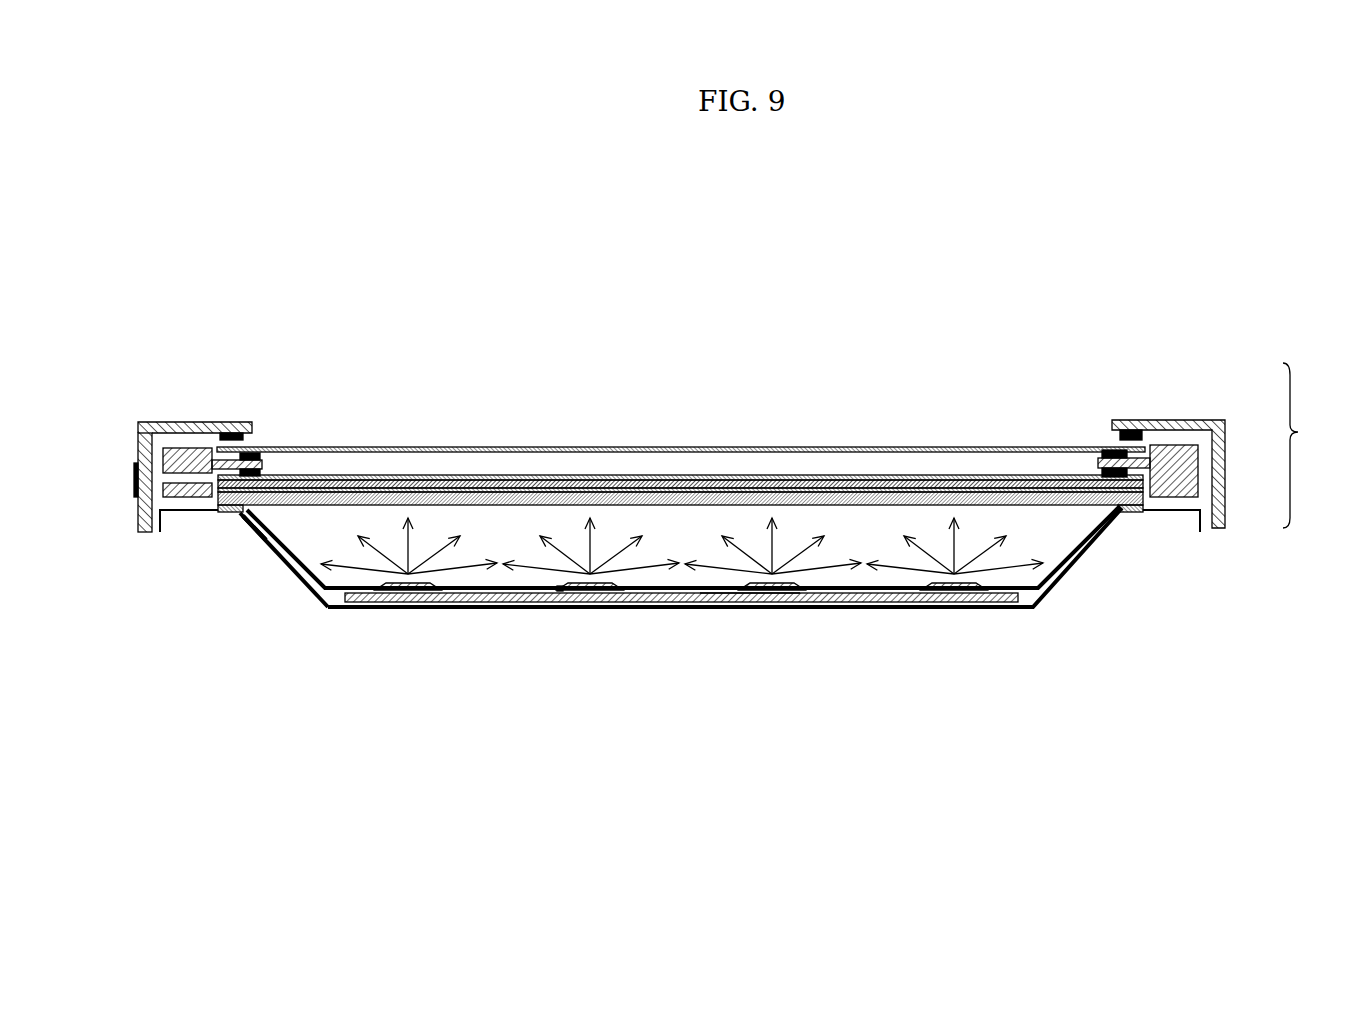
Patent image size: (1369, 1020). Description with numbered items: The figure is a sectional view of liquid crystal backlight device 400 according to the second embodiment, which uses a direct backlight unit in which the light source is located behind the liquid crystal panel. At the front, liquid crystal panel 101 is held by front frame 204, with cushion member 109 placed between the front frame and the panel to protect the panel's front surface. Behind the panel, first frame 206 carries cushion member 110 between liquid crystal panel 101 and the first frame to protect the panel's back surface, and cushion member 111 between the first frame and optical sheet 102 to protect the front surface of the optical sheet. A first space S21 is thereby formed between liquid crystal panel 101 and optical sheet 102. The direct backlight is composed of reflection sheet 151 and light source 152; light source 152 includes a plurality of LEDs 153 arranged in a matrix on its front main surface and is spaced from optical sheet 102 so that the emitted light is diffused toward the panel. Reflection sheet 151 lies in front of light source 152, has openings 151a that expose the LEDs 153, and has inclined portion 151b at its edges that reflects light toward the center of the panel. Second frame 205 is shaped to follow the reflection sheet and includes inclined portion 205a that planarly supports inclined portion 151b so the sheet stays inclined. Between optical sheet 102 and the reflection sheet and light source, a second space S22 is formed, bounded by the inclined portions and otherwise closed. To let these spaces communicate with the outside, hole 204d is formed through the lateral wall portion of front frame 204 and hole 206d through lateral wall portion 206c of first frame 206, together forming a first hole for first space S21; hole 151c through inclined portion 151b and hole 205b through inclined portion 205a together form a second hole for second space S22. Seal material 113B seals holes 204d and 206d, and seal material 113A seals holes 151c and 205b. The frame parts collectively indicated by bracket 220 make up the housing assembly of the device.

The liquid crystal backlight device 400 is at (1077, 294).
The front frame 204 is at (1204, 422).
The hole 204d is at (143, 477).
The seal material 113B is at (132, 483).
The cushion member 109 is at (231, 433).
The hole 206d is at (193, 480).
The cushion member 110 is at (252, 453).
The cushion member 111 is at (261, 470).
The first frame 206 is at (1185, 460).
The lateral wall portion 206c is at (1172, 485).
The liquid crystal panel 101 is at (1013, 446).
The first space S21 is at (631, 462).
The optical sheet 102 is at (818, 472).
The second frame 205 is at (1200, 516).
The inclined portion 205a is at (312, 593).
The hole 205b is at (252, 532).
The seal material 113A is at (245, 527).
The inclined portion 151b is at (291, 550).
The hole 151c is at (265, 525).
The reflection sheet 151 is at (483, 590).
The opening 151a is at (745, 595).
The light source 152 is at (535, 597).
The LED 153 is at (590, 588).
The second space S22 is at (1052, 532).
The housing 220 is at (1310, 445).